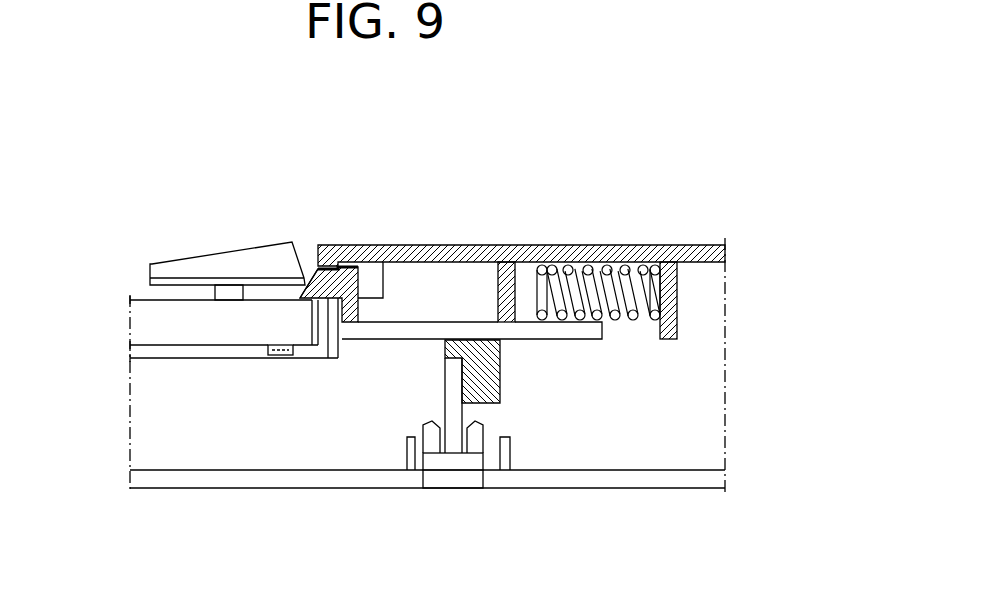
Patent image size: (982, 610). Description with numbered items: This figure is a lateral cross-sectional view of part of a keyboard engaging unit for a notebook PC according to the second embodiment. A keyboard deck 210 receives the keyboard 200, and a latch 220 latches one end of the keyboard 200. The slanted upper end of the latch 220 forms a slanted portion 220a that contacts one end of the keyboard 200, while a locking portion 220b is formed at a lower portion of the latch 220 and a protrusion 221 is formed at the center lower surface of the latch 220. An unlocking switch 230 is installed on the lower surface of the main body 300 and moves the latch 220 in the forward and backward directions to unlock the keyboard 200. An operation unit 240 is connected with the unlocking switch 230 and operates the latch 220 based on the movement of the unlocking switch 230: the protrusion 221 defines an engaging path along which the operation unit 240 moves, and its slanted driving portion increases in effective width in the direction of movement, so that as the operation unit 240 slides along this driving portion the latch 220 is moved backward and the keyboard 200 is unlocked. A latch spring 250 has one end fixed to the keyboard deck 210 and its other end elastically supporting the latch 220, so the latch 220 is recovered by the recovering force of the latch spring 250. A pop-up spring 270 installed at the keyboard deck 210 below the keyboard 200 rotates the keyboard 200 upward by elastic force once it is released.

The keyboard 200 is at (142, 322).
The keyboard deck 210 is at (525, 258).
The latch 220 is at (355, 274).
The slanted portion 220a is at (312, 277).
The locking portion 220b is at (307, 300).
The protrusion 221 is at (500, 374).
The unlocking switch 230 is at (452, 478).
The operation unit 240 is at (458, 411).
The latch spring 250 is at (622, 270).
The pop-up spring 270 is at (283, 357).
The main body 300 is at (600, 488).